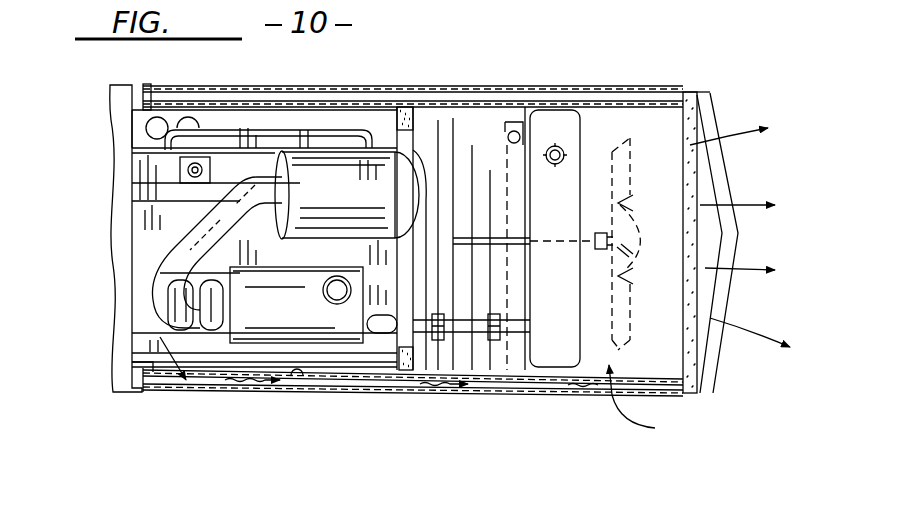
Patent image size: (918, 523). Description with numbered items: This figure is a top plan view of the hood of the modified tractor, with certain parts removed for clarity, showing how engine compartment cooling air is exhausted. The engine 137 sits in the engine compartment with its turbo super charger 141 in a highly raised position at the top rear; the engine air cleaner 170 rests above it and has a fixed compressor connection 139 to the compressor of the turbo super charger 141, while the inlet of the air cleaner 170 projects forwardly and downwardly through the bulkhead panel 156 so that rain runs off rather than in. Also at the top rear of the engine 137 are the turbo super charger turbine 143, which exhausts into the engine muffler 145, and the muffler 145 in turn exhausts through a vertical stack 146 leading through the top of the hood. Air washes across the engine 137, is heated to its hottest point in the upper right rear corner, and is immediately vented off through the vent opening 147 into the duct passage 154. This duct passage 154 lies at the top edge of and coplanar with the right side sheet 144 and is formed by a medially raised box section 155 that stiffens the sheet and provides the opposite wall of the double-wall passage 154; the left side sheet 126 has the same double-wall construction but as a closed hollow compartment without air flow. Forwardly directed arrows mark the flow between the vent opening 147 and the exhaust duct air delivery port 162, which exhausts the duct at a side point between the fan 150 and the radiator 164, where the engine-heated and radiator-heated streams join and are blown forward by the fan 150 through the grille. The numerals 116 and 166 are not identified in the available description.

The outlet end wall 116 is at (703, 88).
The left side sheet 126 is at (503, 90).
The engine 137 is at (150, 221).
The compressor connection 139 is at (281, 180).
The turbo super charger 141 is at (152, 289).
The turbo super charger turbine 143 is at (210, 295).
The side sheet 144 is at (243, 388).
The engine muffler 145 is at (252, 285).
The vertical stack 146 is at (340, 304).
The vent opening 147 is at (212, 372).
The fan 150 is at (627, 140).
The duct passage 154 is at (406, 385).
The medially raised box section 155 is at (296, 380).
The bulkhead panel 156 is at (418, 133).
The exhaust duct air delivery port 162 is at (651, 406).
The radiator 164 is at (567, 173).
The clamp bar 166 is at (408, 358).
The engine air cleaner 170 is at (367, 142).